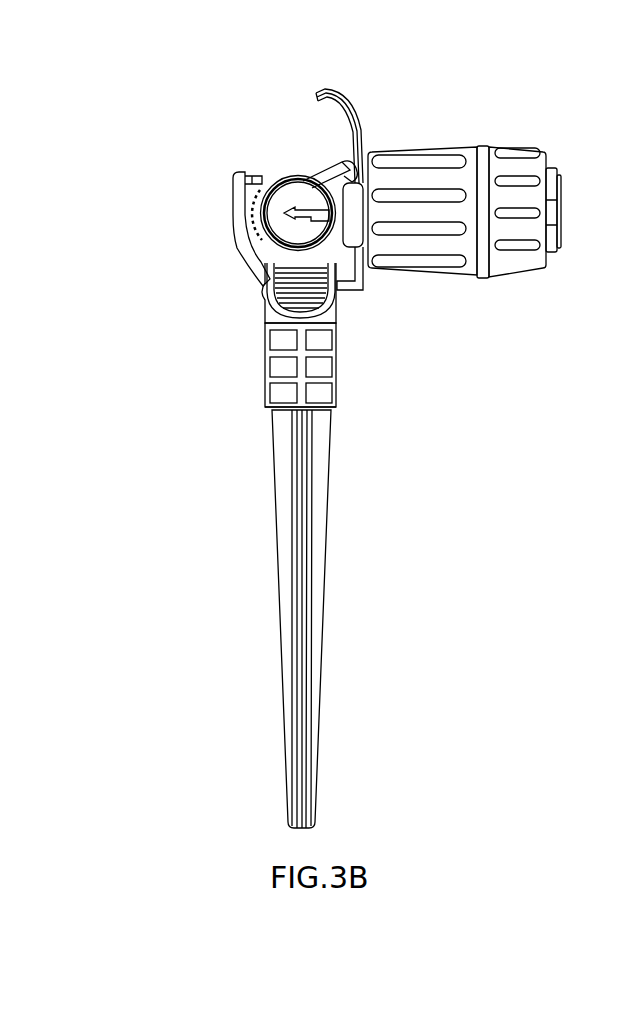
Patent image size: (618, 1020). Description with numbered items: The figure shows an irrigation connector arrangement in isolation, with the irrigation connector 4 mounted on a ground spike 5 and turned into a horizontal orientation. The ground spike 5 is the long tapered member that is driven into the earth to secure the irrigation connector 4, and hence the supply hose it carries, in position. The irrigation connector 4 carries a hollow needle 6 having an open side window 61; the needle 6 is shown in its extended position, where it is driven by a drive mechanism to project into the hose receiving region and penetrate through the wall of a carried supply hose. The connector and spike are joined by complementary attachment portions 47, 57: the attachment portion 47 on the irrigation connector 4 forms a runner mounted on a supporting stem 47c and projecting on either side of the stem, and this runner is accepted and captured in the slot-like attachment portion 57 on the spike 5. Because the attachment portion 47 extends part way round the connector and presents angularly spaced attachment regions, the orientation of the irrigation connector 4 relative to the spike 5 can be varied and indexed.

The irrigation connector 4 is at (427, 152).
The ground spike 5 is at (312, 522).
The hollow needle 6 is at (299, 205).
The attachment portion 47 is at (230, 222).
The supporting stem 47c is at (257, 176).
The attachment portion 57 is at (263, 281).
The open side window 61 is at (305, 223).